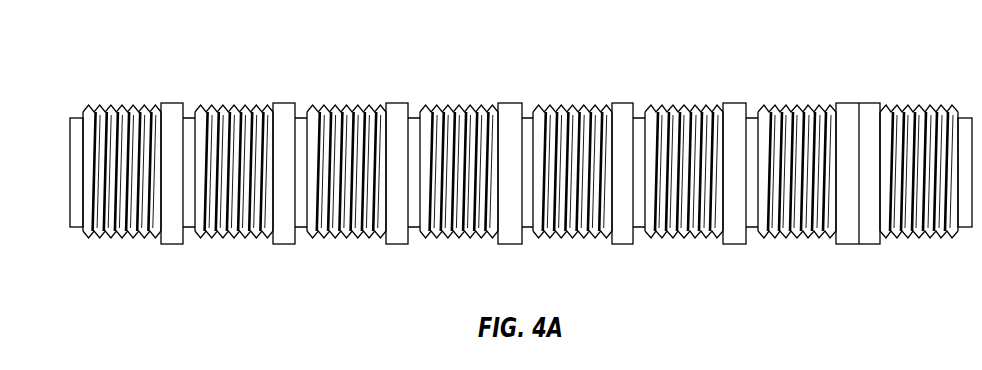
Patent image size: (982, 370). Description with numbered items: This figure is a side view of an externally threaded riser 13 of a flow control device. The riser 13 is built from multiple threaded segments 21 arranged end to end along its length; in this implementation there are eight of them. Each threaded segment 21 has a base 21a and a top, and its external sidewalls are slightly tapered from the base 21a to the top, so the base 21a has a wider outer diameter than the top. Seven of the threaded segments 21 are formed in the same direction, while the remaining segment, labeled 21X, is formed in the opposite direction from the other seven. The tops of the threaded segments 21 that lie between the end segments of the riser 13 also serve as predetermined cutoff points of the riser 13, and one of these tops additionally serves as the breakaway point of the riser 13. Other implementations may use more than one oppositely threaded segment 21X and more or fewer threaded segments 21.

The externally threaded riser 13 is at (83, 64).
The threaded segment 21 is at (130, 240).
The base 21a is at (172, 103).
The oppositely threaded segment 21X is at (905, 105).